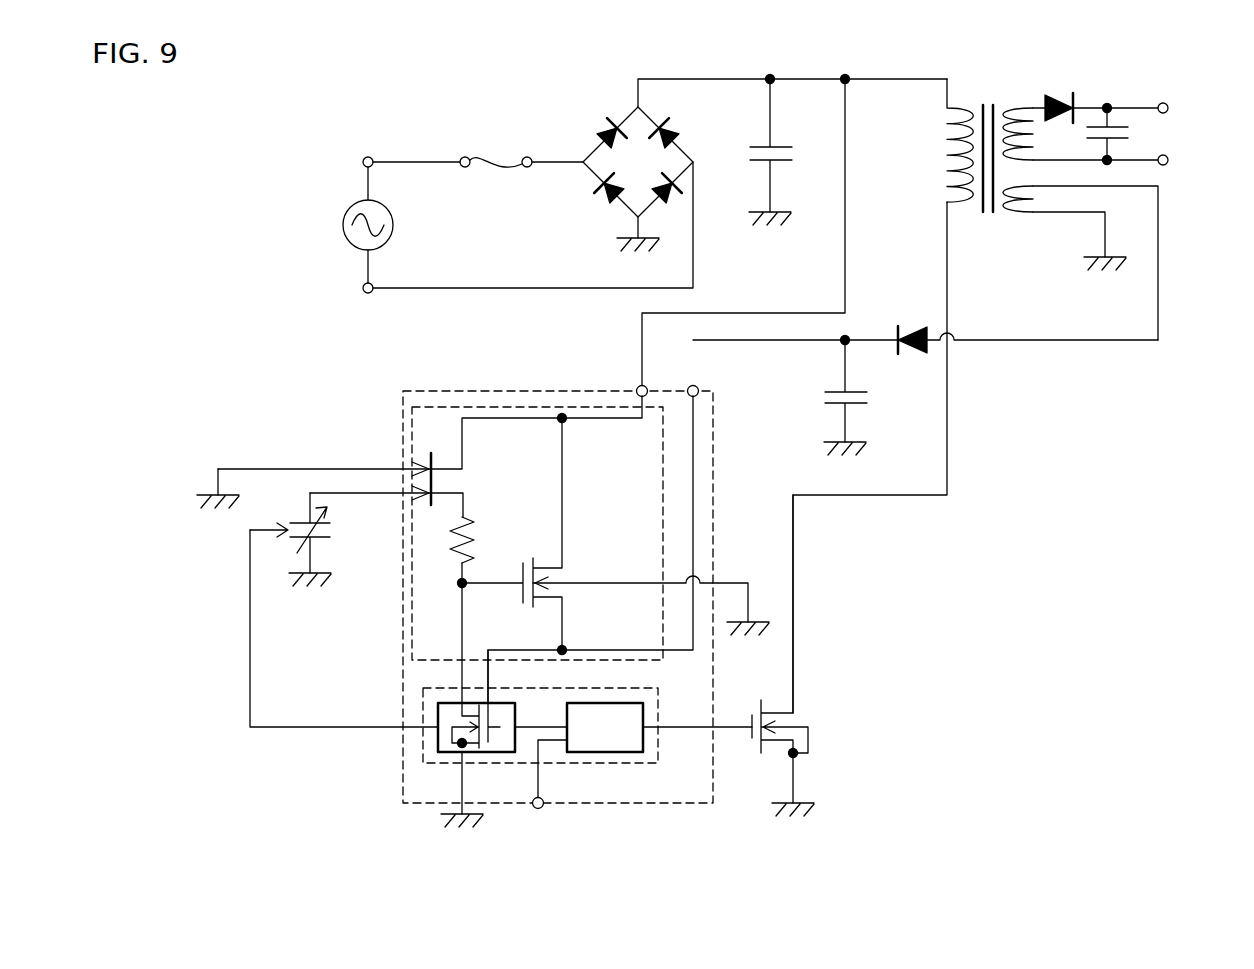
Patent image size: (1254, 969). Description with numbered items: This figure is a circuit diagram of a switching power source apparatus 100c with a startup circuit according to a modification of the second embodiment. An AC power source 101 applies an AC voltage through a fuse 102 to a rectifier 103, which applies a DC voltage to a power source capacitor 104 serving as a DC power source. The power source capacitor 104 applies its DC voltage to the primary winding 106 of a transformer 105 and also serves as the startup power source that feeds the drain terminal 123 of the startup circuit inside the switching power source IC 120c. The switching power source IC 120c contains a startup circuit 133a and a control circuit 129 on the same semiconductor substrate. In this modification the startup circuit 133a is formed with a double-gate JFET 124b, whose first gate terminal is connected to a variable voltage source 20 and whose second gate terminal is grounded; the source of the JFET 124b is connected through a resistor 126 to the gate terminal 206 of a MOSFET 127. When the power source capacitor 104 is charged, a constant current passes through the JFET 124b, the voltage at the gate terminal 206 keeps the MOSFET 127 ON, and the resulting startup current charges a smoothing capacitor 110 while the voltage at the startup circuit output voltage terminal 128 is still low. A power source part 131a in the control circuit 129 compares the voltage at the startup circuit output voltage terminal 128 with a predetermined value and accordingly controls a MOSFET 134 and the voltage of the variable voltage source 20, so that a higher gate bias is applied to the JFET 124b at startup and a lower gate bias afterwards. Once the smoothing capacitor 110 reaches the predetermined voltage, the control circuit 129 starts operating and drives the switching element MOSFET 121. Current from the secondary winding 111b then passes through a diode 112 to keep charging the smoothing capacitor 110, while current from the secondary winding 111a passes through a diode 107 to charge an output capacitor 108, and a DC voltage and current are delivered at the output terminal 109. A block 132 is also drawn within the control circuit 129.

The switching power source apparatus 100c is at (355, 112).
The AC power source 101 is at (393, 220).
The fuse 102 is at (487, 150).
The rectifier 103 is at (600, 127).
The power source capacitor 104 is at (787, 138).
The transformer 105 is at (982, 105).
The primary winding 106 is at (950, 173).
The diode 107 is at (1058, 90).
The output capacitor 108 is at (1123, 125).
The output terminal 109 is at (1168, 108).
The smoothing capacitor 110 is at (857, 407).
The secondary winding 111a is at (1010, 107).
The secondary winding 111b is at (1010, 213).
The diode 112 is at (913, 327).
The switching power source IC 120c is at (403, 765).
The switching element MOSFET 121 is at (795, 718).
The drain terminal 123 is at (636, 387).
The double-gate JFET 124b is at (427, 463).
The resistor 126 is at (475, 527).
The MOSFET 127 is at (557, 577).
The startup circuit output voltage terminal 128 is at (698, 386).
The control circuit 129 is at (423, 703).
The power source part 131a is at (523, 707).
The control circuit 132 is at (645, 712).
The startup circuit 133a is at (468, 405).
The MOSFET 134 is at (483, 742).
The gate terminal 206 is at (465, 590).
The variable voltage source 20 is at (317, 545).